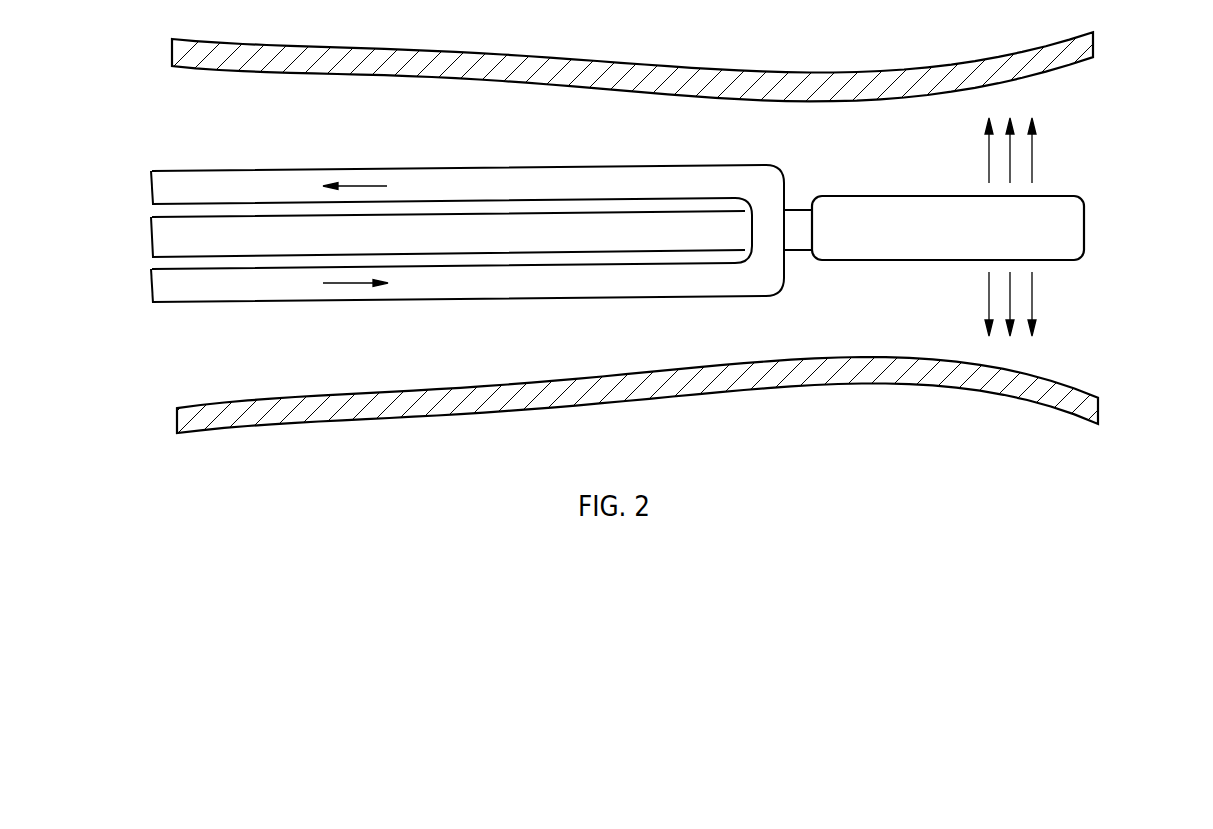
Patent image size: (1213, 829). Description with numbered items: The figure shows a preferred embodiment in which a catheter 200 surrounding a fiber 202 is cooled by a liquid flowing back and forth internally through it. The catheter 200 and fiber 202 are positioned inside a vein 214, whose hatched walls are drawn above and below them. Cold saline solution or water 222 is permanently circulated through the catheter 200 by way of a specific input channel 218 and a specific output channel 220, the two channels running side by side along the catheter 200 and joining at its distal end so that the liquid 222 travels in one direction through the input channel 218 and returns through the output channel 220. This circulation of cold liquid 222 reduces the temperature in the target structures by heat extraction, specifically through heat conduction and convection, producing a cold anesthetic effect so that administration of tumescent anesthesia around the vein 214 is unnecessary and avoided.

The catheter 200 is at (151, 241).
The fiber 202 is at (1084, 225).
The vein 214 is at (800, 72).
The input channel 218 is at (178, 303).
The output channel 220 is at (173, 170).
The cold saline solution or water 222 is at (353, 285).